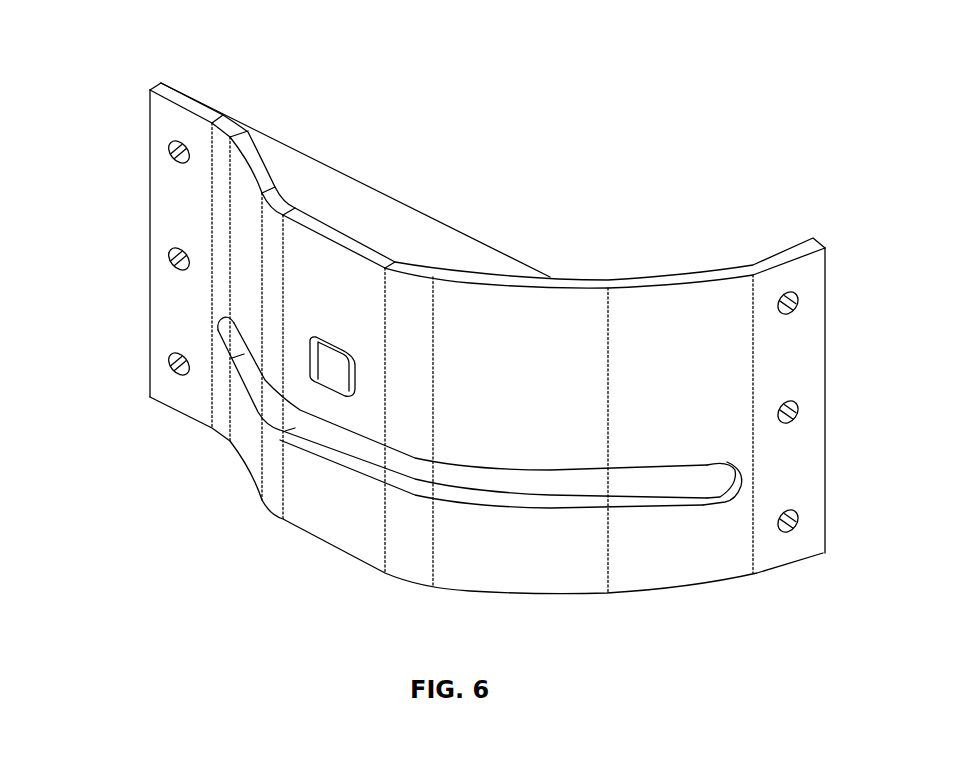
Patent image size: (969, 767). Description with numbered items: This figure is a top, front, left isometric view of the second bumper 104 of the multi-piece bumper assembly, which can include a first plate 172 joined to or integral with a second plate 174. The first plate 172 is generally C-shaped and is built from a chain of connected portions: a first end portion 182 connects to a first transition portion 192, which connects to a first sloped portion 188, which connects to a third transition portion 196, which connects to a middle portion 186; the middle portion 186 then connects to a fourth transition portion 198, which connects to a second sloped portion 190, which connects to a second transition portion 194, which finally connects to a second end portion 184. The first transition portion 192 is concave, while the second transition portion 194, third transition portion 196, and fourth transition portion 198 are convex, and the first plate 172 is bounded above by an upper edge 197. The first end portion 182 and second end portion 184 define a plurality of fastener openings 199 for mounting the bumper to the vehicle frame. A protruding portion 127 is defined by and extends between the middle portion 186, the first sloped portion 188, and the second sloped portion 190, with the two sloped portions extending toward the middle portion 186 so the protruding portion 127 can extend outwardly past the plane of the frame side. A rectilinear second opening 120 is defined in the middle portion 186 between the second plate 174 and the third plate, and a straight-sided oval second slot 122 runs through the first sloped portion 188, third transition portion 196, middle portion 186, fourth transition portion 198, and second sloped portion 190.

The second bumper 104 is at (123, 24).
The first end portion 182 is at (184, 133).
The second end portion 184 is at (792, 289).
The middle portion 186 is at (315, 252).
The second plate 174 is at (373, 222).
The first plate 172 is at (498, 313).
The upper edge 197 is at (688, 277).
The fastener openings 199 is at (173, 255).
The first transition portion 192 is at (217, 408).
The first sloped portion 188 is at (245, 443).
The third transition portion 196 is at (277, 503).
The fourth transition portion 198 is at (408, 567).
The second sloped portion 190 is at (455, 562).
The second transition portion 194 is at (680, 575).
The protruding portion 127 is at (338, 533).
The second opening 120 is at (348, 372).
The second slot 122 is at (657, 490).